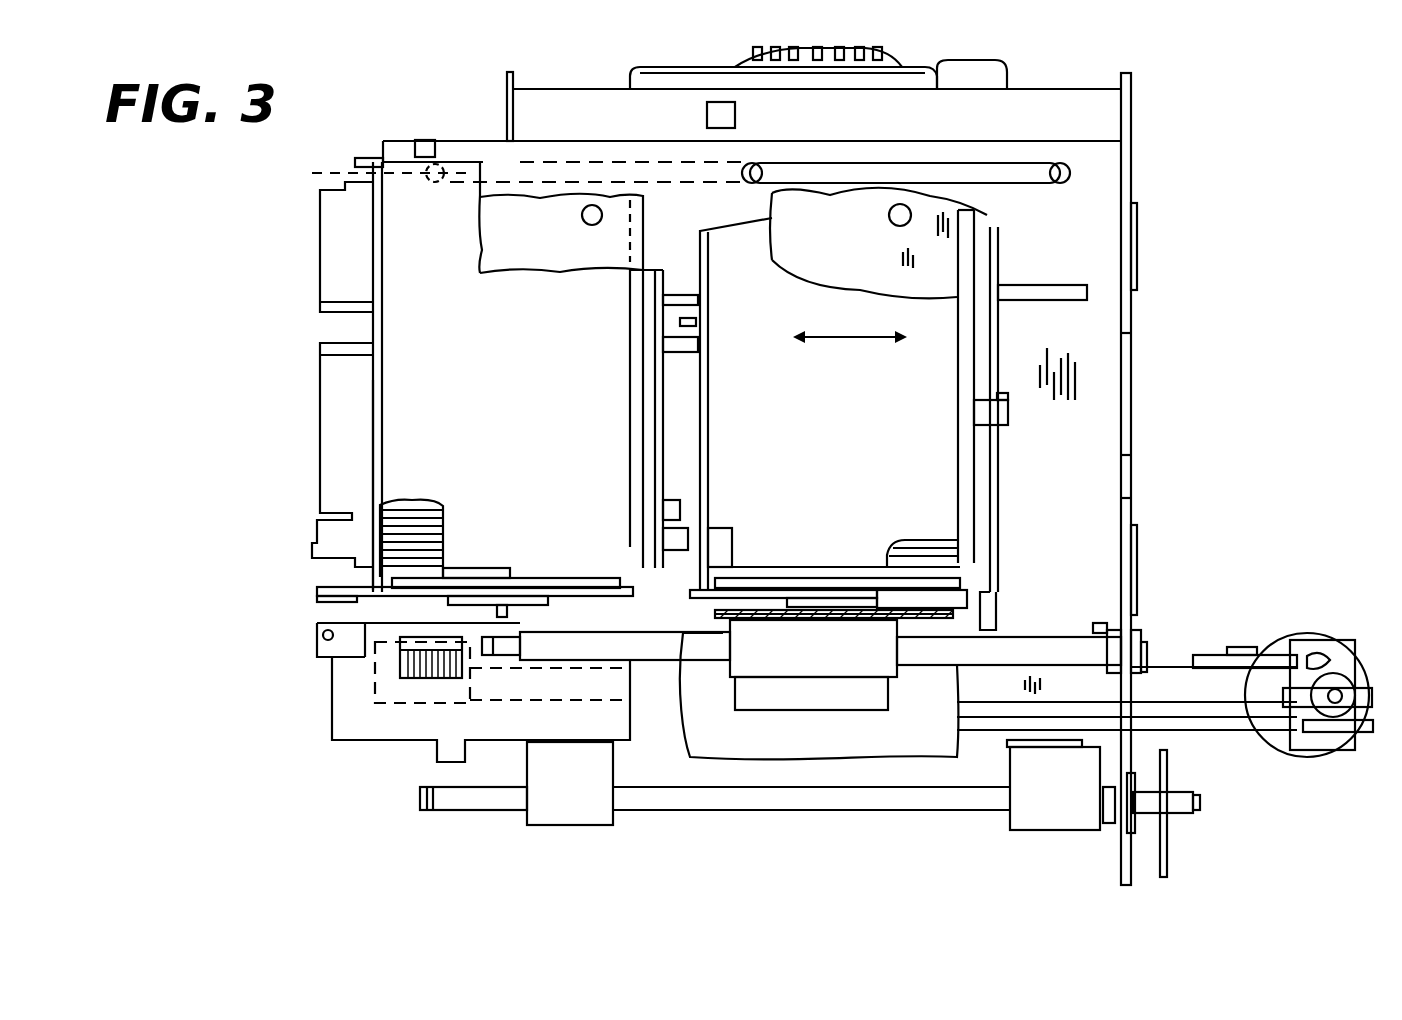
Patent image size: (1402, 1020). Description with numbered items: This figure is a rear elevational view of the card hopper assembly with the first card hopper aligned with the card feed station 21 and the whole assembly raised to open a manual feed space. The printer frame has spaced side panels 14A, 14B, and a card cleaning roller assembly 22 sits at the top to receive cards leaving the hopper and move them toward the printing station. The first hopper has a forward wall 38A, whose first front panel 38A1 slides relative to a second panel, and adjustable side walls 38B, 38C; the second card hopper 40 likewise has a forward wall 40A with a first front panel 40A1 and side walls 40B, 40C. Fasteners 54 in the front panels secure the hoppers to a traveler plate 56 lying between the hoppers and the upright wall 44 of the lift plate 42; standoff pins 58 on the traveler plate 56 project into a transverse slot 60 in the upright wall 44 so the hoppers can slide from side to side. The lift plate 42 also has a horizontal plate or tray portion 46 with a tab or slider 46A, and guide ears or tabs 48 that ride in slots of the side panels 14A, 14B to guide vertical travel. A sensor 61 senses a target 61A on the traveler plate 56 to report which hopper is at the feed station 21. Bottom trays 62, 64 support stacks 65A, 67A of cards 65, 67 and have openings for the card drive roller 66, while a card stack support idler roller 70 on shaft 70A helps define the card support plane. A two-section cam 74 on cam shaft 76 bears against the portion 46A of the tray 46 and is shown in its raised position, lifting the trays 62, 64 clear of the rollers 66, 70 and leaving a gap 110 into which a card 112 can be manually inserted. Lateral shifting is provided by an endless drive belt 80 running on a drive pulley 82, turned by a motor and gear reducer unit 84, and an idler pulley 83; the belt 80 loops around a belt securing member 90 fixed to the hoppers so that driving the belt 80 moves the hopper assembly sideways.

The side panel 14A is at (1133, 396).
The side panel 14B is at (505, 84).
The card feed station 21 is at (763, 722).
The card cleaning roller assembly 22 is at (985, 74).
The forward wall 38A is at (945, 453).
The first front panel 38A1 is at (820, 210).
The side wall 38B is at (712, 414).
The side wall 38C is at (963, 373).
The second card hopper 40 is at (455, 198).
The forward wall 40A is at (395, 302).
The side wall 40B is at (383, 446).
The side wall 40C is at (627, 388).
The first front panel 40A1 is at (582, 258).
The lift plate 42 is at (1074, 337).
The upright wall 44 is at (1102, 457).
The horizontal plate or tray portion 46 is at (992, 720).
The tab or slider 46A is at (1030, 748).
The guide ears or tabs 48 is at (1138, 250).
The fasteners 54 is at (588, 226).
The traveler plate 56 is at (505, 233).
The standoff pins 58 is at (1055, 164).
The slot 60 is at (867, 171).
The sensor 61 is at (705, 115).
The target 61A is at (412, 148).
The tray 62 is at (800, 614).
The tray 64 is at (570, 578).
The cards 65 is at (757, 576).
The stack 65A is at (936, 552).
The card drive roller 66 is at (810, 702).
The cards 67 is at (470, 578).
The stack 67A is at (410, 500).
The card stack support idler roller 70 is at (810, 668).
The shaft 70A is at (1022, 640).
The cam 74 is at (540, 802).
The cam shaft 76 is at (505, 802).
The drive belt 80 is at (1170, 686).
The drive pulley 82 is at (1212, 655).
The idler pulley 83 is at (378, 703).
The motor and gear reducer unit 84 is at (1263, 742).
The belt securing member 90 is at (440, 683).
The gap 110 is at (698, 620).
The card 112 is at (940, 606).